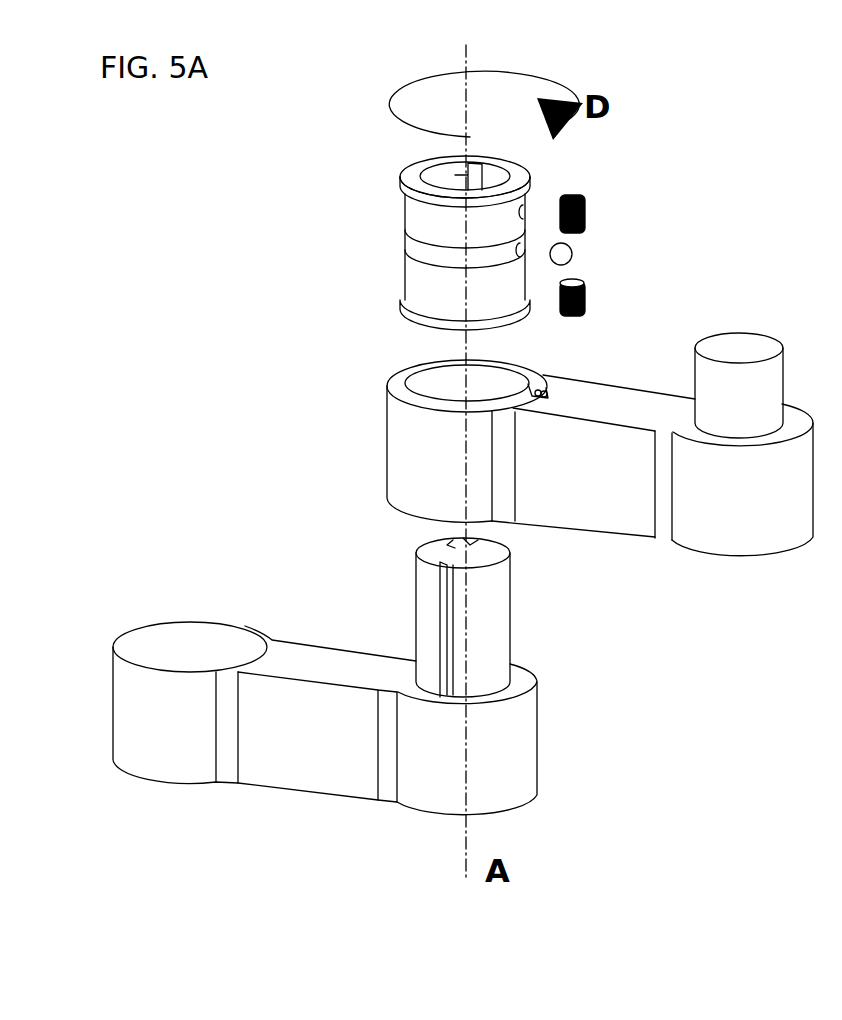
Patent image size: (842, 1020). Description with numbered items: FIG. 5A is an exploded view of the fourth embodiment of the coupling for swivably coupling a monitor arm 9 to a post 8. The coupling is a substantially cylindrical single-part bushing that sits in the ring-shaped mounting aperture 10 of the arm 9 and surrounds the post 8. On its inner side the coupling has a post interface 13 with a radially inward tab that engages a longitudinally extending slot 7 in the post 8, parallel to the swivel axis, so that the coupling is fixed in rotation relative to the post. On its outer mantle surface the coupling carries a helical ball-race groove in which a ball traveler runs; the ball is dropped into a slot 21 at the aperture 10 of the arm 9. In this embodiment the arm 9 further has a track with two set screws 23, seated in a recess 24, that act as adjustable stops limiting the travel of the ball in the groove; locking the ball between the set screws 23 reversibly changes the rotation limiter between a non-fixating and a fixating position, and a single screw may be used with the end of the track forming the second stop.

The slot 7 is at (445, 588).
The coupling post 8 is at (728, 405).
The monitor arm 9 is at (604, 486).
The mounting aperture 10 is at (436, 386).
The post interface 13 is at (440, 173).
The slot of traveler 21 is at (534, 390).
The set screw 23 is at (588, 215).
The recess of set screw 24 is at (546, 392).